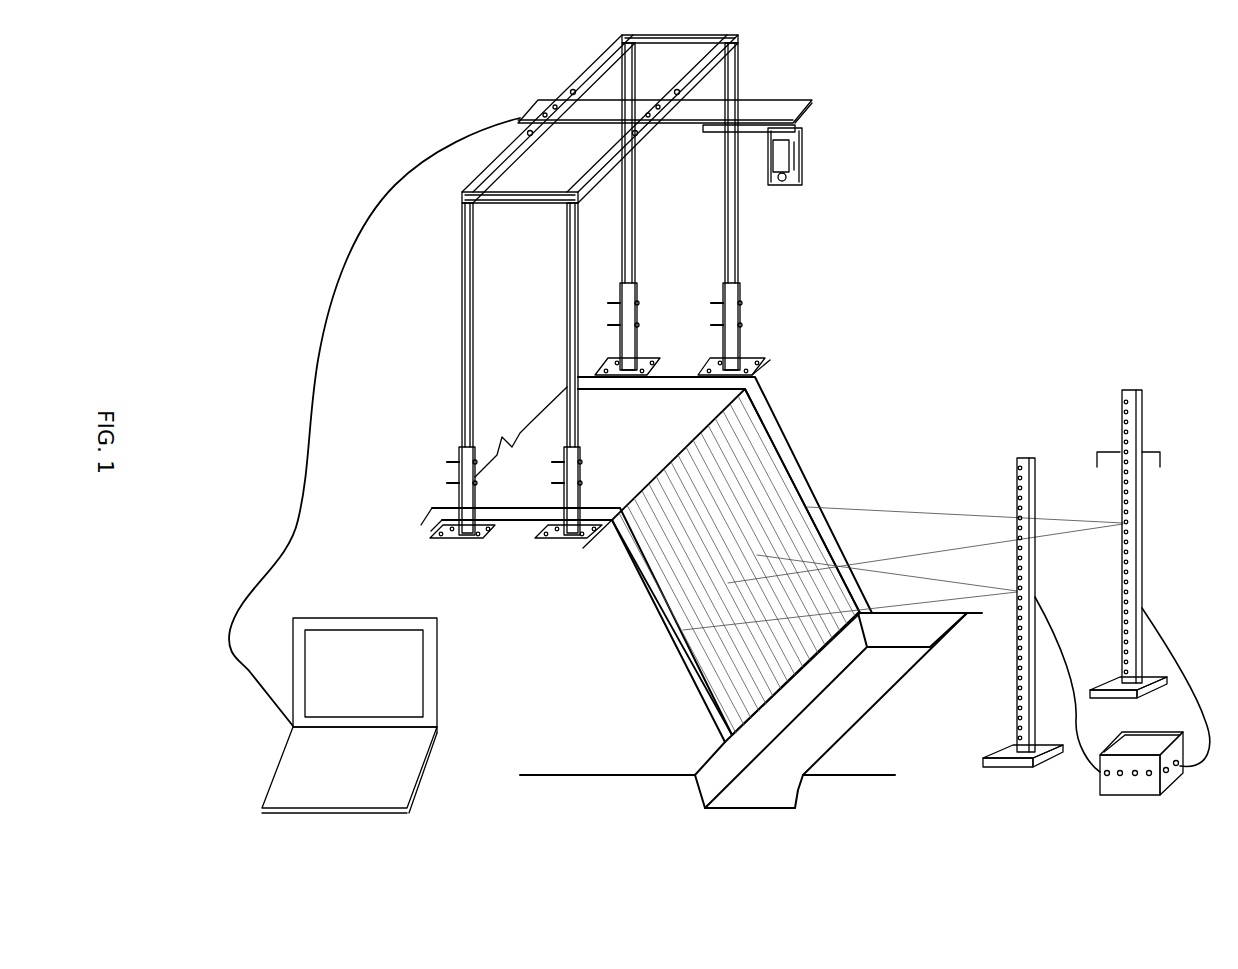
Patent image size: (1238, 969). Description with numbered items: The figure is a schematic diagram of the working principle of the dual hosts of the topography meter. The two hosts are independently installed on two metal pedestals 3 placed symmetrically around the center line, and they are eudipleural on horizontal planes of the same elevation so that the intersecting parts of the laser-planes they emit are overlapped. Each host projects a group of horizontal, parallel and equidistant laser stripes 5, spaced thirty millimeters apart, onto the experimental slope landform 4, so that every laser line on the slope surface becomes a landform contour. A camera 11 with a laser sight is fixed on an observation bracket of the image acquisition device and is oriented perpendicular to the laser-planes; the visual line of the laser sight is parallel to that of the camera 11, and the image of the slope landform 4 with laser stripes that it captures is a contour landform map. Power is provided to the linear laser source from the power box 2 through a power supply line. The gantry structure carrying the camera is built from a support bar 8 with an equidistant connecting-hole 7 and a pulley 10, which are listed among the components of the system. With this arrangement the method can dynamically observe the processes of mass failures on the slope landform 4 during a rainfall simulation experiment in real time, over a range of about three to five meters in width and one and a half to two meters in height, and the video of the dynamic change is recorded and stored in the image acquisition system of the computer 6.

The power box 2 is at (1160, 795).
The metal pedestal 3 is at (1003, 767).
The slope landform 4 is at (692, 667).
The parallel and equidistant laser stripes 5 is at (660, 598).
The computer 6 is at (262, 804).
The equidistant connecting-hole 7 is at (466, 437).
The support bar 8 is at (538, 100).
The pulley 10 is at (797, 135).
The camera 11 is at (797, 185).